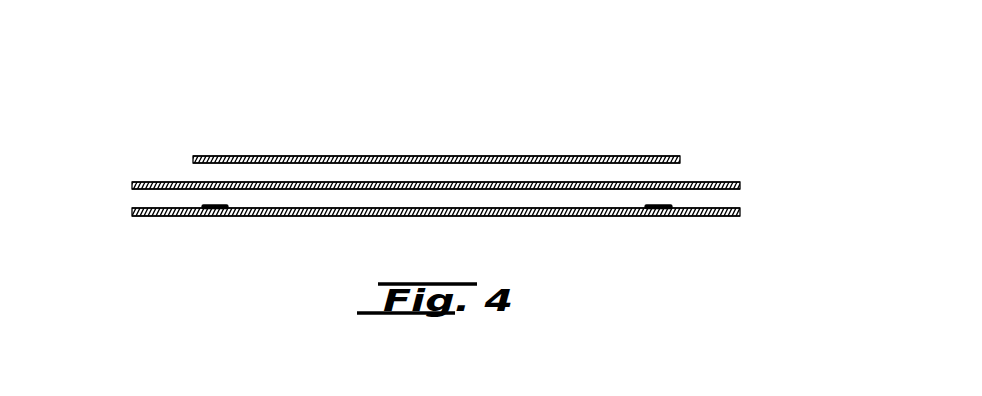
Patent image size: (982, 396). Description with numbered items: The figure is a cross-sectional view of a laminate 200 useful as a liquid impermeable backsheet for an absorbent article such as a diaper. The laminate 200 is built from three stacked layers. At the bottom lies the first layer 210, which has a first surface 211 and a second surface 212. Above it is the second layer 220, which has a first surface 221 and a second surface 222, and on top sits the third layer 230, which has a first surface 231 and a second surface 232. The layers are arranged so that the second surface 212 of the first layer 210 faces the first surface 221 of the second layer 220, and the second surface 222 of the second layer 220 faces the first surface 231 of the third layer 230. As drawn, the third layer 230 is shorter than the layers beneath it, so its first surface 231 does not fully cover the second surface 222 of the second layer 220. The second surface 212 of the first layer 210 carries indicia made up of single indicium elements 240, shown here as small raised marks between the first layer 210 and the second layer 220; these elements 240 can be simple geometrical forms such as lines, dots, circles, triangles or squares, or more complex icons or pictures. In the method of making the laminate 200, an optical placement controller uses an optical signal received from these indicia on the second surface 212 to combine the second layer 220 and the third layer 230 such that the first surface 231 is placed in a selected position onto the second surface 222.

The laminate 200 is at (238, 125).
The first layer 210 is at (152, 208).
The first surface of the first layer 211 is at (707, 201).
The second surface of the first layer 212 is at (705, 217).
The second layer 220 is at (152, 182).
The first surface of the second layer 221 is at (726, 178).
The second surface of the second layer 222 is at (724, 193).
The third layer 230 is at (214, 156).
The first surface of the third layer 231 is at (656, 152).
The second surface of the third layer 232 is at (657, 165).
The indicium element 240 is at (217, 206).